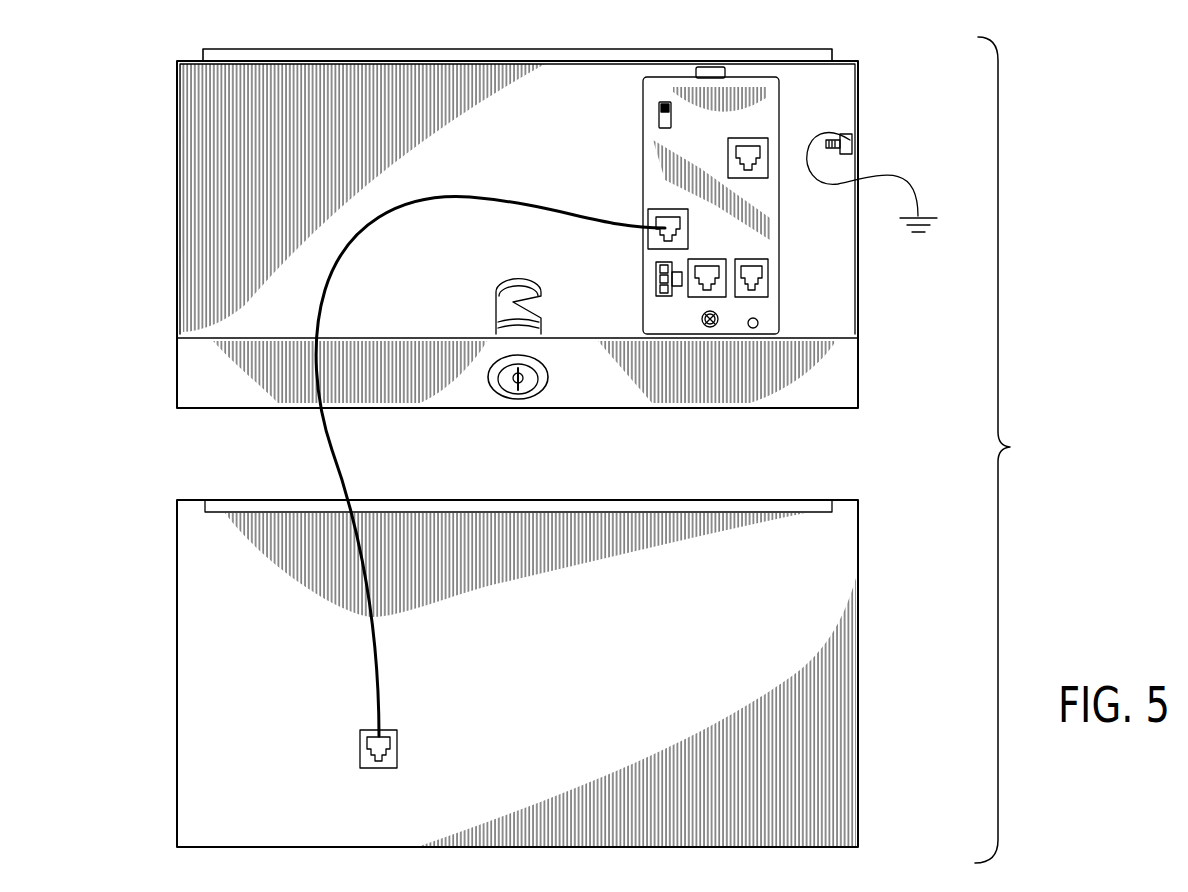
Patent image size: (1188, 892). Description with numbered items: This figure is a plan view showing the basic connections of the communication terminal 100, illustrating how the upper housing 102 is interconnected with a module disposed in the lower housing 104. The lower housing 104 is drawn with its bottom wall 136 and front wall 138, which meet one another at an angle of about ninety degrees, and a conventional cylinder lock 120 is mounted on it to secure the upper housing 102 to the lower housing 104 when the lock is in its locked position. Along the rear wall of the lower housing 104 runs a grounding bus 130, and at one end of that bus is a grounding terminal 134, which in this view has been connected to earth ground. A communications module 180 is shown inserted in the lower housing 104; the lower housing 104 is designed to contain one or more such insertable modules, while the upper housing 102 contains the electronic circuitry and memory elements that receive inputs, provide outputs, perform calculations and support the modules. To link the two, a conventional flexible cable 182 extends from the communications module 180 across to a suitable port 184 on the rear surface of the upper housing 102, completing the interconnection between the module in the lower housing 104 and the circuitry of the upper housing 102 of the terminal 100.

The communication terminal 100 is at (1078, 468).
The upper housing 102 is at (442, 673).
The lower housing 104 is at (487, 237).
The cylinder lock 120 is at (522, 392).
The grounding bus 130 is at (777, 63).
The grounding terminal 134 is at (850, 144).
The bottom wall 136 is at (255, 287).
The front wall 138 is at (620, 392).
The communications module 180 is at (763, 108).
The flexible cable 182 is at (375, 218).
The port 184 is at (393, 750).